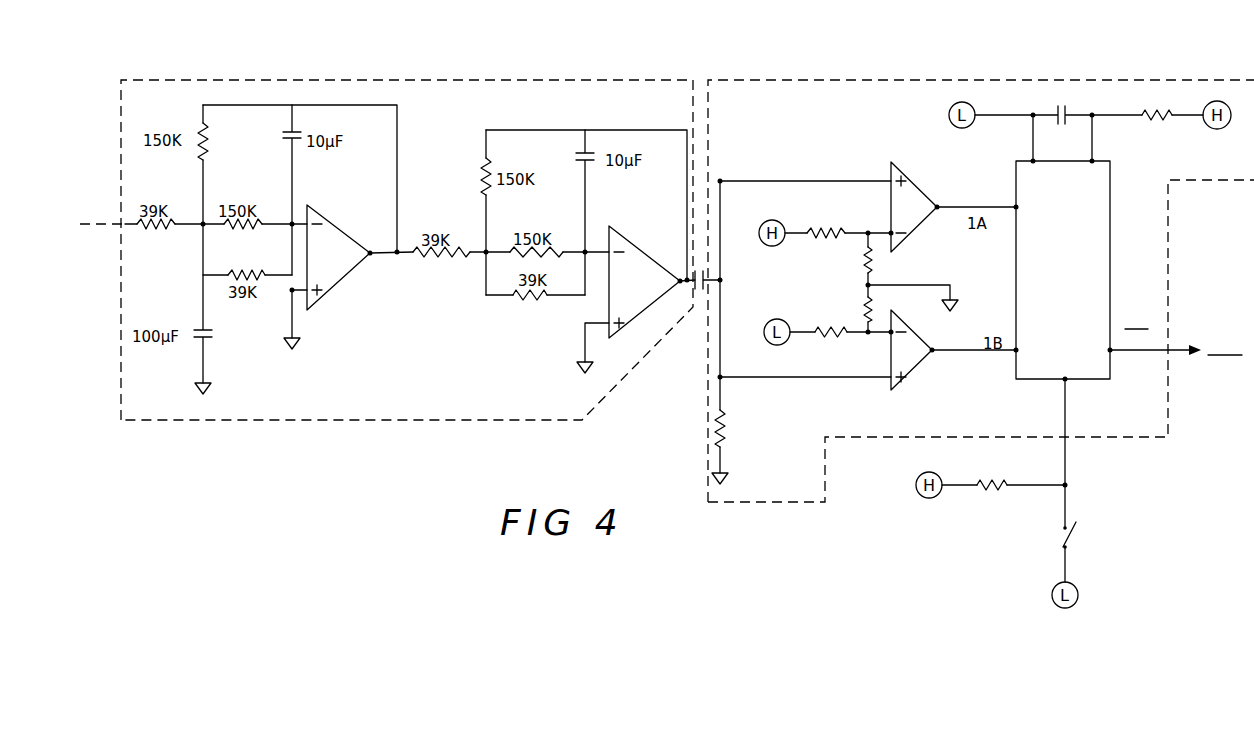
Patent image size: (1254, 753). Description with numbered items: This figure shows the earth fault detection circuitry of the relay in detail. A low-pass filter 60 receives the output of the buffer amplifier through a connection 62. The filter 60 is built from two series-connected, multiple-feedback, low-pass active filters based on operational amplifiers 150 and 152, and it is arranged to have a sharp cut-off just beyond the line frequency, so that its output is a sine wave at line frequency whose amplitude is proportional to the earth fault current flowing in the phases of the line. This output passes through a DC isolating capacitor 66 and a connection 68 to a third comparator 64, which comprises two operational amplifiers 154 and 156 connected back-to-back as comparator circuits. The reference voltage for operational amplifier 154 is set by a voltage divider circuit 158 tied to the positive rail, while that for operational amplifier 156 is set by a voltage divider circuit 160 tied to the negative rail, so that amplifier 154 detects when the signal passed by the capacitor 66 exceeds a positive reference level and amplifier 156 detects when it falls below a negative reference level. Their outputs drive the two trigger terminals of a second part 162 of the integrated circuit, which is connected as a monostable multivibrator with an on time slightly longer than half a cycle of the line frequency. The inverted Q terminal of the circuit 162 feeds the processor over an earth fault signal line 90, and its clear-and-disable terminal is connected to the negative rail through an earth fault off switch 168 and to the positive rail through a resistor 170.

The low-pass filter 60 is at (417, 78).
The connection 62 is at (110, 226).
The third comparator 64 is at (1045, 78).
The DC isolating capacitor 66 is at (700, 283).
The connection 68 is at (719, 283).
The earth fault signal line 90 is at (1173, 351).
The operational amplifier 150 is at (345, 262).
The operational amplifier 152 is at (640, 257).
The operational amplifier 154 is at (913, 194).
The operational amplifier 156 is at (912, 358).
The voltage divider circuit 158 is at (830, 247).
The voltage divider circuit 160 is at (845, 300).
The second part of the 4528B integrated circuit 162 is at (1093, 284).
The earth fault off switch 168 is at (1072, 536).
The resistor 170 is at (988, 494).